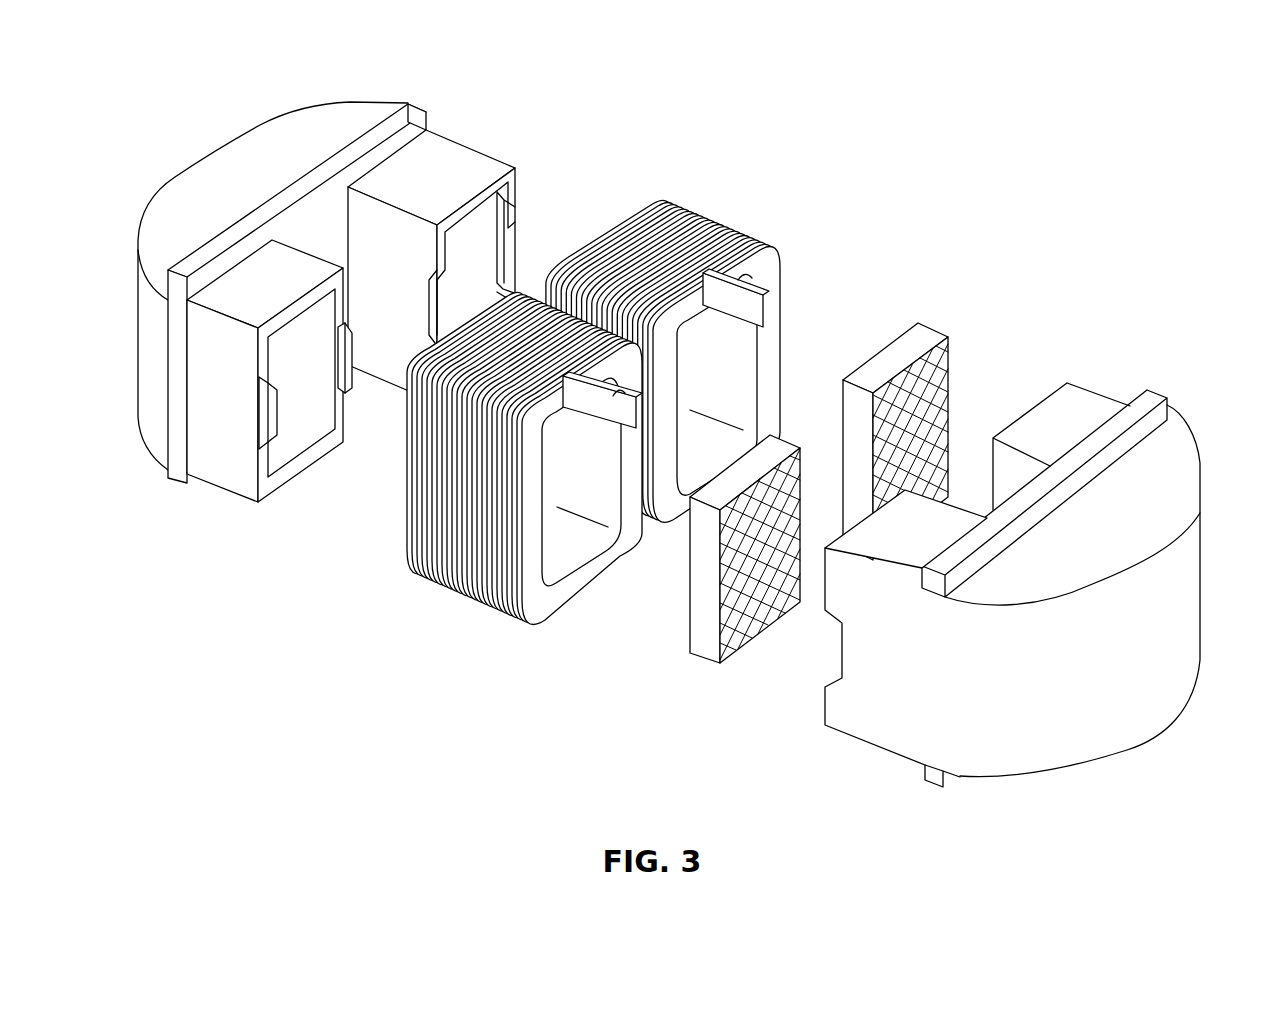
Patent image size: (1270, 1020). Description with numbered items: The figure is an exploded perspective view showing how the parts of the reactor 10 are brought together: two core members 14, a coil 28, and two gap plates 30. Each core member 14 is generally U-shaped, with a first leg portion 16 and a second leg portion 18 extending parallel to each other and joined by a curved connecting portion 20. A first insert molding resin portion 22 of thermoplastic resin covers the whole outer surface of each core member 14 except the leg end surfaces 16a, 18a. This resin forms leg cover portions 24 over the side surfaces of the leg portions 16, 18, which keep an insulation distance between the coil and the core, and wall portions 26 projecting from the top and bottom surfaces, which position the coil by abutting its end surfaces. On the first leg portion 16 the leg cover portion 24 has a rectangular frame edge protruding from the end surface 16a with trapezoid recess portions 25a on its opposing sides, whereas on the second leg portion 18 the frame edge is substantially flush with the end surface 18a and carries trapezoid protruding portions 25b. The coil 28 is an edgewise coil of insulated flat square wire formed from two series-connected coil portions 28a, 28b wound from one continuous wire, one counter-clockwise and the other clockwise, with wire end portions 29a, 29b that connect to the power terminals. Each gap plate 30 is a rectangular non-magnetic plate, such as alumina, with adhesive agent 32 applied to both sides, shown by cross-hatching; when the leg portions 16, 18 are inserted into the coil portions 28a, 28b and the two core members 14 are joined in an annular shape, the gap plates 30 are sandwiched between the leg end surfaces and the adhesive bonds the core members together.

The reactor 10 is at (664, 426).
The core member 14 is at (685, 426).
The first leg portion 16 is at (666, 312).
The leg end surface 16a is at (487, 281).
The second leg portion 18 is at (633, 502).
The leg end surface 18a is at (325, 366).
The connecting portion 20 is at (208, 152).
The first insert molding resin portion 22 is at (276, 131).
The leg cover portion 24 is at (465, 148).
The recess portion 25a is at (510, 248).
The protruding portion 25b is at (357, 382).
The wall portion 26 is at (178, 490).
The coil 28 is at (602, 408).
The coil portion 28a is at (689, 335).
The coil portion 28b is at (507, 480).
The wire end portion 29a is at (768, 290).
The wire end portion 29b is at (597, 413).
The gap plate 30 is at (808, 511).
The adhesive agent 32 is at (952, 388).